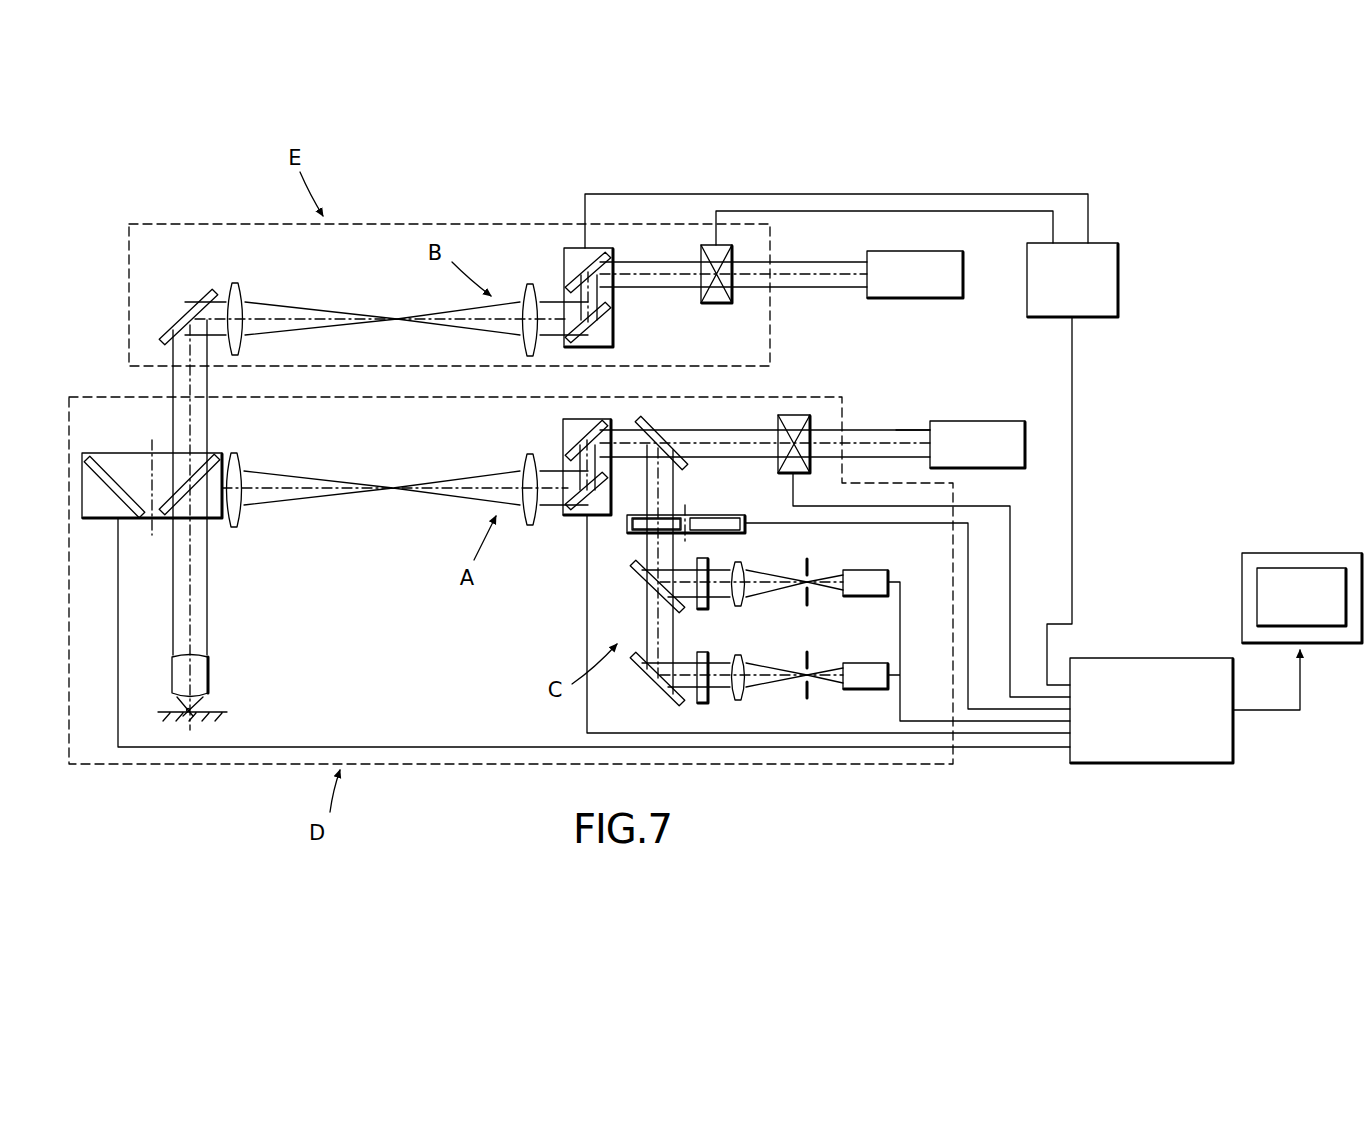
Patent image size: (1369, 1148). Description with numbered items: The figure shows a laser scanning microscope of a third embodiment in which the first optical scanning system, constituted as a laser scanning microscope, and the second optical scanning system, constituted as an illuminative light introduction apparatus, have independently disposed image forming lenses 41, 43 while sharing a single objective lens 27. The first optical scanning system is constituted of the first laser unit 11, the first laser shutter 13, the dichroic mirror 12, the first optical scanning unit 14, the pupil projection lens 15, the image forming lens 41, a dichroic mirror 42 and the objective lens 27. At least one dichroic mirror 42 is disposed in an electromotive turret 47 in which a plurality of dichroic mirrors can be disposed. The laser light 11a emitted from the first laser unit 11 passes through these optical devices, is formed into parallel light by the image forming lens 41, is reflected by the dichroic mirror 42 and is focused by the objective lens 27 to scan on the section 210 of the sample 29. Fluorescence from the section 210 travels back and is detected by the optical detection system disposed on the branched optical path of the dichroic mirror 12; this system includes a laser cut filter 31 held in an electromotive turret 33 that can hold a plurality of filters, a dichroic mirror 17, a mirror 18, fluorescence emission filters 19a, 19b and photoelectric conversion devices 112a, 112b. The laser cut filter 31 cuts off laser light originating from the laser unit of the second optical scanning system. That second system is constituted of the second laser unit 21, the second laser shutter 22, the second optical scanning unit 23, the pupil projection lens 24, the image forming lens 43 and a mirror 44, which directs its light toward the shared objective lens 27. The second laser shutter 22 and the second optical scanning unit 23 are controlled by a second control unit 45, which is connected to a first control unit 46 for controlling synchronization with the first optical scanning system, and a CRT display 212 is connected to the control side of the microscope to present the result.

The first laser unit 11 is at (997, 421).
The laser light 11a is at (896, 430).
The dichroic mirror 12 is at (655, 420).
The first laser shutter 13 is at (795, 415).
The first optical scanning unit 14 is at (563, 436).
The pupil projection lens 15 is at (529, 526).
The dichroic mirror 17 is at (636, 570).
The mirror 18 is at (644, 667).
The fluorescence emission filter 19a is at (712, 560).
The fluorescence emission filter 19b is at (712, 652).
The second laser unit 21 is at (963, 273).
The second laser shutter 22 is at (732, 251).
The second optical scanning unit 23 is at (613, 253).
The pupil projection lens 24 is at (527, 285).
The objective lens 27 is at (210, 663).
The sample 29 is at (180, 710).
The laser cut filter 31 is at (632, 522).
The electromotive turret 33 is at (725, 515).
The image forming lens 41 is at (243, 524).
The dichroic mirror 42 is at (206, 462).
The image forming lens 43 is at (244, 291).
The mirror 44 is at (188, 316).
The second control unit 45 is at (1118, 275).
The first control unit 46 is at (1185, 764).
The electromotive turret 47 is at (93, 518).
The photoelectric conversion device 112a is at (862, 570).
The photoelectric conversion device 112b is at (855, 663).
The section 210 is at (222, 711).
The CRT display 212 is at (1298, 553).